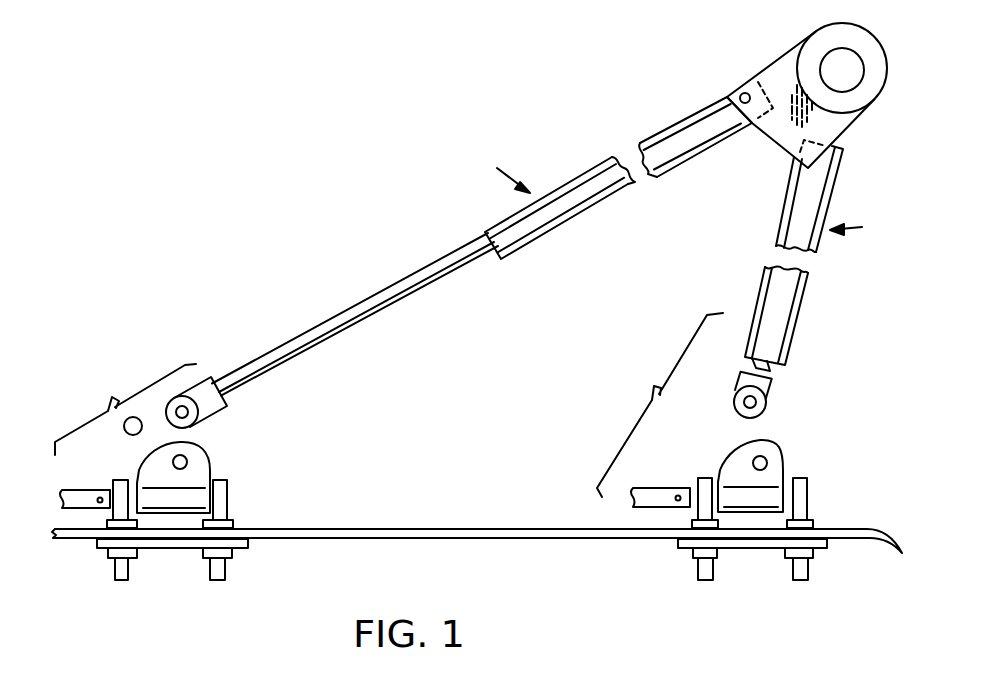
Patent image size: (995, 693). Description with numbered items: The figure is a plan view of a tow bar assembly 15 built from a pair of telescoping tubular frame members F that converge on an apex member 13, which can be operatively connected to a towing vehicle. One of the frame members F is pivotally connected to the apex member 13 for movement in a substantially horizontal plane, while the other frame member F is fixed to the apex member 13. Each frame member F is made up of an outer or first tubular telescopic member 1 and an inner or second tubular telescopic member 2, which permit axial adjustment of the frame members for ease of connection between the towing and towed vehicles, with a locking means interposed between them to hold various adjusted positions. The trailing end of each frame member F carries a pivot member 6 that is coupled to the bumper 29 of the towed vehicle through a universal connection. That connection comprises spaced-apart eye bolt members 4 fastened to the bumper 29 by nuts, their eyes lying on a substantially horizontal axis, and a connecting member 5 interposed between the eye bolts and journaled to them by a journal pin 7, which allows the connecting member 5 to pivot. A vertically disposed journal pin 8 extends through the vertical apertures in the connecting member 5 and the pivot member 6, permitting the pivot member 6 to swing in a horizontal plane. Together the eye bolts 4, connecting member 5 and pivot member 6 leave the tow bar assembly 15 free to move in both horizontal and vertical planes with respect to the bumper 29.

The first tubular telescopic member 1 is at (667, 128).
The second tubular telescopic member 2 is at (297, 338).
The eye bolt members 4 is at (228, 487).
The connecting member 5 is at (210, 463).
The pivot member 6 is at (214, 412).
The journal pin 7 is at (78, 490).
The vertically disposed journal pin 8 is at (125, 428).
The apex member 13 is at (790, 70).
The tow bar assembly 15 is at (580, 109).
The bumper 29 is at (433, 528).
The frame members F is at (679, 193).